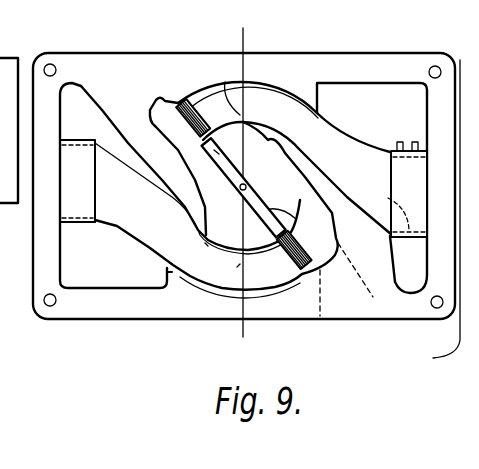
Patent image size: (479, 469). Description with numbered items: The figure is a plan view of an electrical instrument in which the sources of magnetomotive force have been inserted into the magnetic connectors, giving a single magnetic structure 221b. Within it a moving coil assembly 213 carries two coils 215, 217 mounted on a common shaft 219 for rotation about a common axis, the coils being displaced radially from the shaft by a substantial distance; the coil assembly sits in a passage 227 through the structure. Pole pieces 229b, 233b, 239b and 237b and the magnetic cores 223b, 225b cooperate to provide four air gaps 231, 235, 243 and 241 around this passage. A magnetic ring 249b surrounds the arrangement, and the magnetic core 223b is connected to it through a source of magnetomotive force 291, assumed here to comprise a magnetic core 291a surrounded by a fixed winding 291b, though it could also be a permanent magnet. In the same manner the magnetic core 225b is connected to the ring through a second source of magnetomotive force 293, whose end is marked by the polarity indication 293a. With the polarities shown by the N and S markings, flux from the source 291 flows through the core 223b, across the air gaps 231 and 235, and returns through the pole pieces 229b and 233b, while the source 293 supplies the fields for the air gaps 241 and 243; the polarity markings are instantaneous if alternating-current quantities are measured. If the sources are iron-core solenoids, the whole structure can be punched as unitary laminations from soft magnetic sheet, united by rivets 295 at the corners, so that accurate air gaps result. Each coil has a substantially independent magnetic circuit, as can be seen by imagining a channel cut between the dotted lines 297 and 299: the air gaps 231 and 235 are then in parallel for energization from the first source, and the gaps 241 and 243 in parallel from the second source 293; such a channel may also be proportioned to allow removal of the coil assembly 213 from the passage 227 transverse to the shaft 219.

The moving coil assembly 213 is at (294, 241).
The coil 215 is at (155, 112).
The coil 217 is at (283, 288).
The shaft 219 is at (243, 190).
The magnetic structure 221b is at (456, 75).
The magnetic core 223b is at (258, 92).
The magnetic core 225b is at (160, 252).
The passage 227 is at (210, 153).
The pole piece 229b is at (318, 98).
The air gap 231 is at (225, 82).
The pole piece 233b is at (272, 177).
The air gap 235 is at (196, 100).
The pole piece 237b is at (172, 273).
The pole piece 239b is at (216, 248).
The air gap 241 is at (237, 267).
The air gap 243 is at (205, 243).
The magnetic ring 249b is at (433, 358).
The source of magnetomotive force 291 is at (426, 250).
The magnetic core 291a is at (392, 200).
The fixed winding 291b is at (424, 240).
The source of magnetomotive force 293 is at (74, 140).
The magnet end 293a is at (84, 224).
The rivets 295 is at (49, 306).
The dotted line 297 is at (312, 316).
The dotted line 299 is at (374, 316).